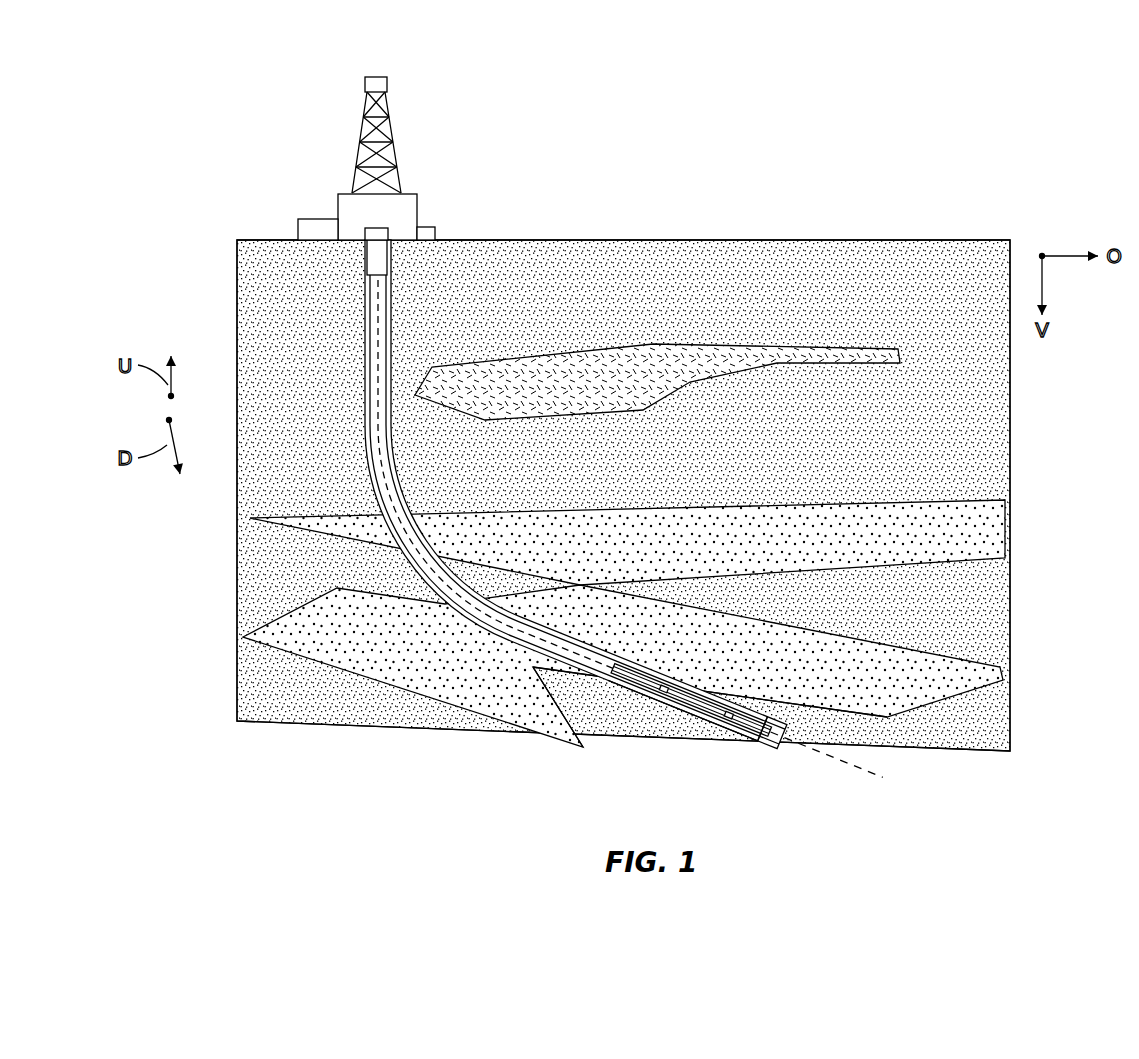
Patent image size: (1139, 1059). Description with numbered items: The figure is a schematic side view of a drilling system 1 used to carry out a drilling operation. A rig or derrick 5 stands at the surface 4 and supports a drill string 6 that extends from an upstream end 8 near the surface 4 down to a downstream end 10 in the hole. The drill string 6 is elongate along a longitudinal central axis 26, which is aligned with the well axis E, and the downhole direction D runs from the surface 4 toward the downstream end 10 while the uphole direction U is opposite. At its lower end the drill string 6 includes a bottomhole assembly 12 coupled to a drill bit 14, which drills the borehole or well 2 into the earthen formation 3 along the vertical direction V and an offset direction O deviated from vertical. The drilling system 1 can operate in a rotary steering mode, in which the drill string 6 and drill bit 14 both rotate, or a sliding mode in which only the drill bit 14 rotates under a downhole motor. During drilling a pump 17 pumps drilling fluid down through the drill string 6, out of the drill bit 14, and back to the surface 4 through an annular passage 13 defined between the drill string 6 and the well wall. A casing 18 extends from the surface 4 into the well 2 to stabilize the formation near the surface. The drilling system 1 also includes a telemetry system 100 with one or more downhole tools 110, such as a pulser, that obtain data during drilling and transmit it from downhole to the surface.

The drilling system 1 is at (626, 508).
The well 2 is at (366, 428).
The earthen formation 3 is at (258, 428).
The surface 4 is at (1008, 240).
The derrick 5 is at (352, 148).
The drill string 6 is at (388, 521).
The upstream end 8 is at (362, 266).
The downstream end 10 is at (790, 762).
The bottomhole assembly 12 is at (693, 738).
The annular passage 13 is at (443, 603).
The drill bit 14 is at (777, 716).
The pump 17 is at (300, 233).
The casing 18 is at (372, 252).
The longitudinal central axis 26 is at (867, 772).
The telemetry system 100 is at (703, 680).
The downhole tool 110 is at (645, 686).